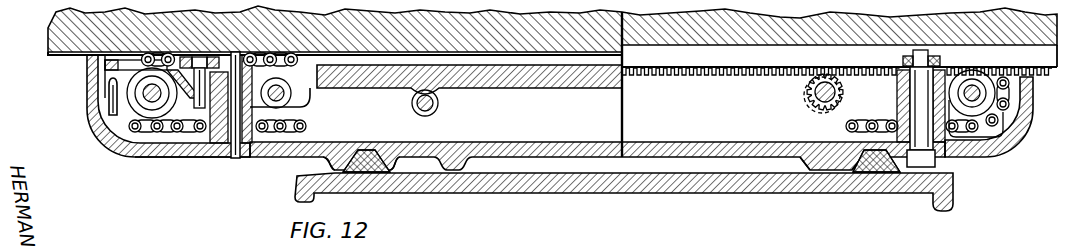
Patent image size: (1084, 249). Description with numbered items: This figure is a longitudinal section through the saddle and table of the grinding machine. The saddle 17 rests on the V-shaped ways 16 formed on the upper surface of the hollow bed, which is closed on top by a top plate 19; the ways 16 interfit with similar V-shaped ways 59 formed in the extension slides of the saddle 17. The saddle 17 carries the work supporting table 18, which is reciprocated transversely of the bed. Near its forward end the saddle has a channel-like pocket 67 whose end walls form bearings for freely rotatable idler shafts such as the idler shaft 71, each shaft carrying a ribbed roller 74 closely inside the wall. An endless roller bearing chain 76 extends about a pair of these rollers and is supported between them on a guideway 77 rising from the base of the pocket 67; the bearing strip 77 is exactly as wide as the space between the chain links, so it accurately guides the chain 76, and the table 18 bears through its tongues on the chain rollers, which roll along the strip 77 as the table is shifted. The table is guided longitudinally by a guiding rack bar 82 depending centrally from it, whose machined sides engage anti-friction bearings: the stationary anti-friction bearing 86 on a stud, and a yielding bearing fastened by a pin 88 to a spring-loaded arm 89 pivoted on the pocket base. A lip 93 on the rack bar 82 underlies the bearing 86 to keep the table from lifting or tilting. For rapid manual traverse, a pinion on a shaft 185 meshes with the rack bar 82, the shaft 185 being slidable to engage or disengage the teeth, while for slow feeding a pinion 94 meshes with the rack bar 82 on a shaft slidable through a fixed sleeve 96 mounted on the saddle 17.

The ways 16 is at (327, 163).
The saddle 17 is at (140, 158).
The work supporting table 18 is at (56, 12).
The top plate 19 is at (628, 193).
The V-shaped ways 59 is at (372, 170).
The channel-like pocket 67 is at (563, 130).
The idler shaft 71 is at (980, 98).
The ribbed roller 74 is at (100, 126).
The roller bearing chain 76 is at (300, 125).
The guideway 77 is at (514, 80).
The guiding rack bar 82 is at (748, 64).
The anti-friction bearing 86 is at (936, 63).
The pin 88 is at (200, 106).
The arm 89 is at (97, 71).
The lip 93 is at (781, 68).
The pinion 94 is at (838, 93).
The sleeve 96 is at (235, 160).
The shaft 185 is at (283, 98).